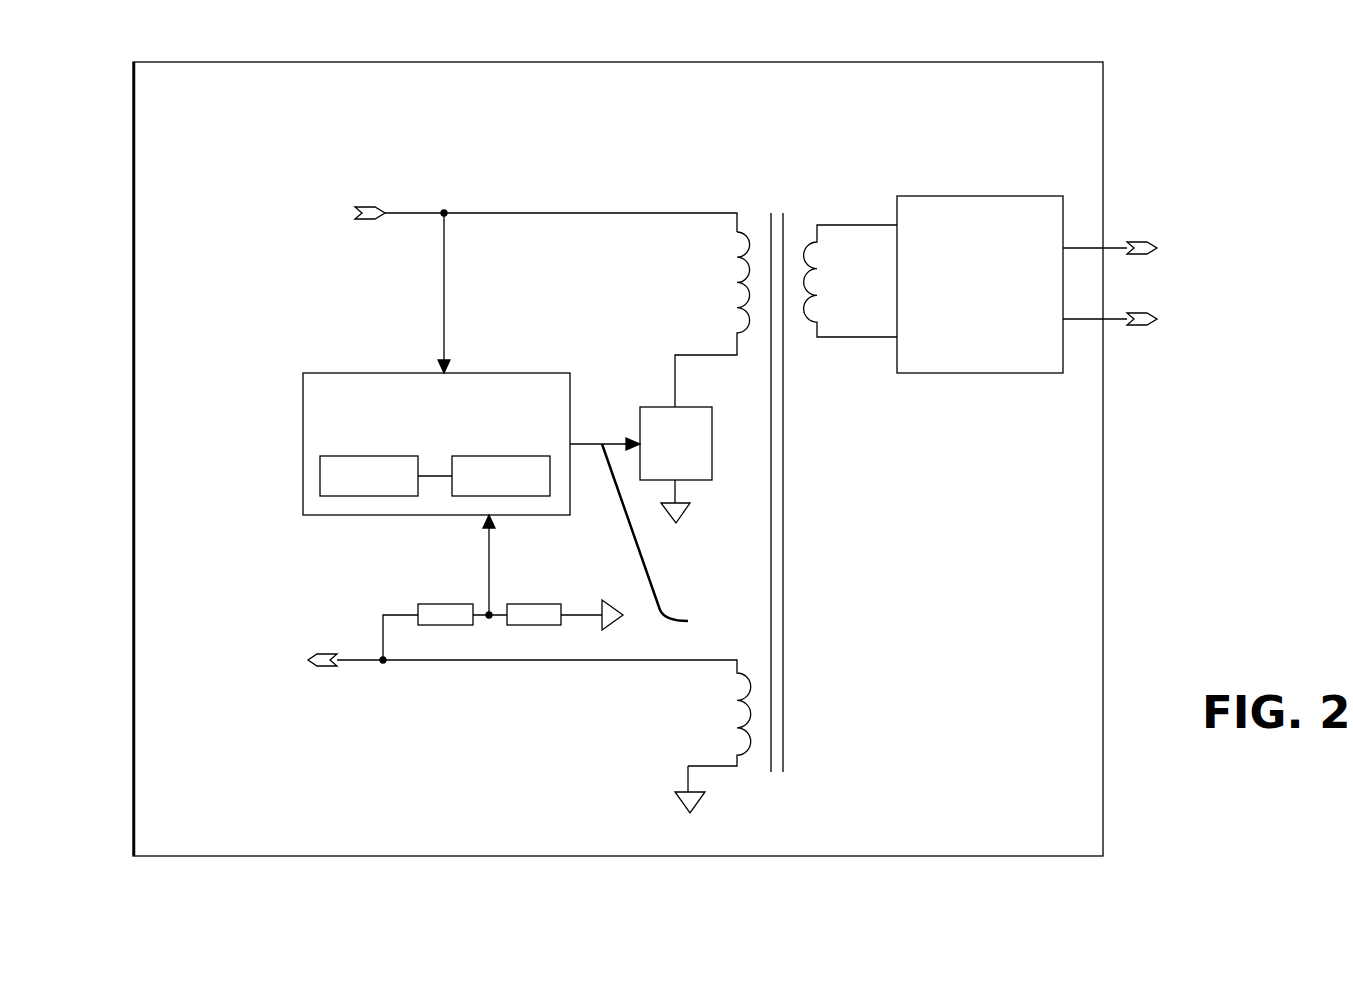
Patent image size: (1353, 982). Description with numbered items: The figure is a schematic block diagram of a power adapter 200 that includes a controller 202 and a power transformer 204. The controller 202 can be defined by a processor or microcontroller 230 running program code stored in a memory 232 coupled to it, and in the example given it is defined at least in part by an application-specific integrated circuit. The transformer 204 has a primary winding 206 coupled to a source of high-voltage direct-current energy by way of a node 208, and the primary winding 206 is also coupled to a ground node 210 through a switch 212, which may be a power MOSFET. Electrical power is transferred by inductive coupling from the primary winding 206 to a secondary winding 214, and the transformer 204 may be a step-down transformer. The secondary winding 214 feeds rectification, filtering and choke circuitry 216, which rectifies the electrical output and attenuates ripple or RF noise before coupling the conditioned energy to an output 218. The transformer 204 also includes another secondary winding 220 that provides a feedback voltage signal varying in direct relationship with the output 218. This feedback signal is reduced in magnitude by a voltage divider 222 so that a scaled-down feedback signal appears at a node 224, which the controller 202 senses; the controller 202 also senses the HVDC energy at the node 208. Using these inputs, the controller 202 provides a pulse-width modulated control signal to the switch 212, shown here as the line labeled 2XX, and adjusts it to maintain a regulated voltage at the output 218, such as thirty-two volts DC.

The power adapter 200 is at (272, 121).
The controller 202 is at (303, 420).
The power transformer 204 is at (776, 166).
The primary winding 206 is at (748, 232).
The node 208 is at (560, 213).
The ground node 210 is at (684, 516).
The switch 212 is at (650, 407).
The secondary winding 214 is at (815, 242).
The rectification, filtering and choke (RFC) circuitry 216 is at (955, 196).
The output 218 is at (1166, 196).
The secondary winding 220 is at (743, 757).
The voltage divider 222 is at (338, 612).
The node 224 is at (492, 578).
The processor or microcontroller 230 is at (394, 488).
The memory 232 is at (526, 488).
The control signal line 2XX is at (672, 539).